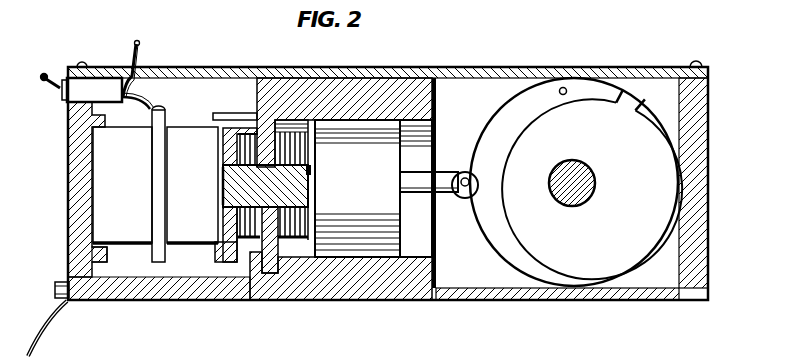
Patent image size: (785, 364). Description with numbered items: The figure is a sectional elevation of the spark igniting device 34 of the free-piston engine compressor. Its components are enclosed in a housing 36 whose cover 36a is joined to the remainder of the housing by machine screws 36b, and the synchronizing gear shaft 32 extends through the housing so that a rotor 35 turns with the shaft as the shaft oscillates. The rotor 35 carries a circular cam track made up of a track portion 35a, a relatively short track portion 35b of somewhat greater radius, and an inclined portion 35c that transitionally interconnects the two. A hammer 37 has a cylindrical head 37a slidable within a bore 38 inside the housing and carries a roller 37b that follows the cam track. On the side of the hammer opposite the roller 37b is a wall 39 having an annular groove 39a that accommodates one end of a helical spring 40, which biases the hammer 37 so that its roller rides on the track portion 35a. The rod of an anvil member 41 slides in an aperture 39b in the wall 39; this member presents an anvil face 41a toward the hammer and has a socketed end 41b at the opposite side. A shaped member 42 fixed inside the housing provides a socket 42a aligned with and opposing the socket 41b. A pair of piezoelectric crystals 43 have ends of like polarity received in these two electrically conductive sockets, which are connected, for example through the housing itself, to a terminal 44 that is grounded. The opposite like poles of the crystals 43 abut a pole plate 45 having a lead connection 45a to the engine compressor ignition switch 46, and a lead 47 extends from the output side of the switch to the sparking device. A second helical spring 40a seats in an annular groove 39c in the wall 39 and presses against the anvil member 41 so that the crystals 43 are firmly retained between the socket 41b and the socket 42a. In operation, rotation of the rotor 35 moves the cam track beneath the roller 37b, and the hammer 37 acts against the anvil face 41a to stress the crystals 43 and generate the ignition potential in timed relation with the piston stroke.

The synchronizing gear shaft 32 is at (576, 160).
The igniting device 34 is at (500, 292).
The rotor 35 is at (647, 193).
The track portion 35a is at (657, 225).
The track portion 35b is at (573, 77).
The inclined portion 35c is at (560, 94).
The housing 36 is at (703, 273).
The cover 36a is at (432, 57).
The machine screws 36b is at (84, 64).
The hammer 37 is at (360, 232).
The cylindrical head 37a is at (398, 246).
The roller 37b is at (460, 200).
The bore 38 is at (307, 258).
The wall 39 is at (250, 258).
The annular groove 39a is at (270, 250).
The aperture 39b is at (267, 142).
The annular groove 39c is at (213, 117).
The helical spring 40 is at (312, 153).
The helical spring 40a is at (245, 228).
The anvil member 41 is at (310, 190).
The anvil face 41a is at (312, 173).
The socketed end 41b is at (224, 186).
The shaped member 42 is at (70, 181).
The socket 42a is at (97, 232).
The piezoelectric crystals 43 is at (134, 170).
The terminal 44 is at (68, 303).
The pole plate 45 is at (153, 250).
The lead connection 45a is at (152, 109).
The ignition switch 46 is at (80, 93).
The lead 47 is at (140, 52).